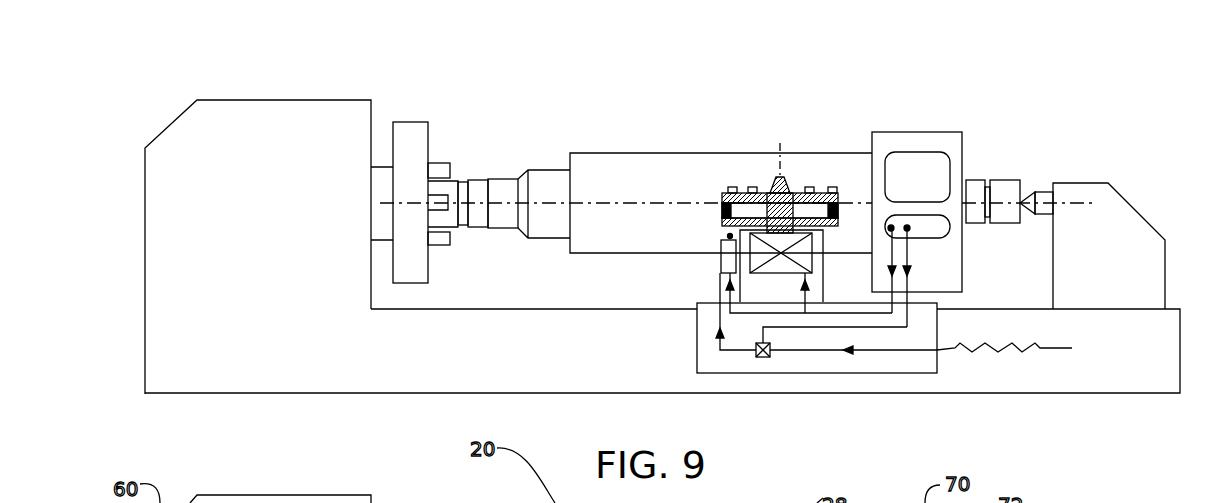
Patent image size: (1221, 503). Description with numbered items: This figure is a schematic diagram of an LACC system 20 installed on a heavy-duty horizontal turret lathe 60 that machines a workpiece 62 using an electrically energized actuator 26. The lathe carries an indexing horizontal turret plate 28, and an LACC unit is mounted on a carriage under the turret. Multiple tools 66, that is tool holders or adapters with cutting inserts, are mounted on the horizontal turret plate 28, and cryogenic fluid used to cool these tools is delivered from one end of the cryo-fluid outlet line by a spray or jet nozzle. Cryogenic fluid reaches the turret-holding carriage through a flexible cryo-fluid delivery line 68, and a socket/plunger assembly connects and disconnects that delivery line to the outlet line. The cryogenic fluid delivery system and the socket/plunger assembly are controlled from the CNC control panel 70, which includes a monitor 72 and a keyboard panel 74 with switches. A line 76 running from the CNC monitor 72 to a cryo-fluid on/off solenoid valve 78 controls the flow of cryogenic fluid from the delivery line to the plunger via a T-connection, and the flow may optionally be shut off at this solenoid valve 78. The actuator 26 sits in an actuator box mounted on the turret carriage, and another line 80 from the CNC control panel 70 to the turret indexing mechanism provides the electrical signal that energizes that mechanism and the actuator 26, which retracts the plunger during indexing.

The horizontal turret lathe 60 is at (187, 133).
The LACC system 20 is at (606, 100).
The tools 66 is at (712, 197).
The horizontal turret plate 28 is at (823, 190).
The actuator 26 is at (721, 257).
The CNC control panel 70 is at (933, 132).
The monitor 72 is at (935, 160).
The keyboard panel 74 is at (945, 228).
The workpiece 62 is at (1014, 180).
The cryo-fluid on/off solenoid valve 78 is at (763, 357).
The line 80 is at (838, 313).
The line 76 is at (894, 328).
The flexible cryo-fluid delivery line 68 is at (980, 352).